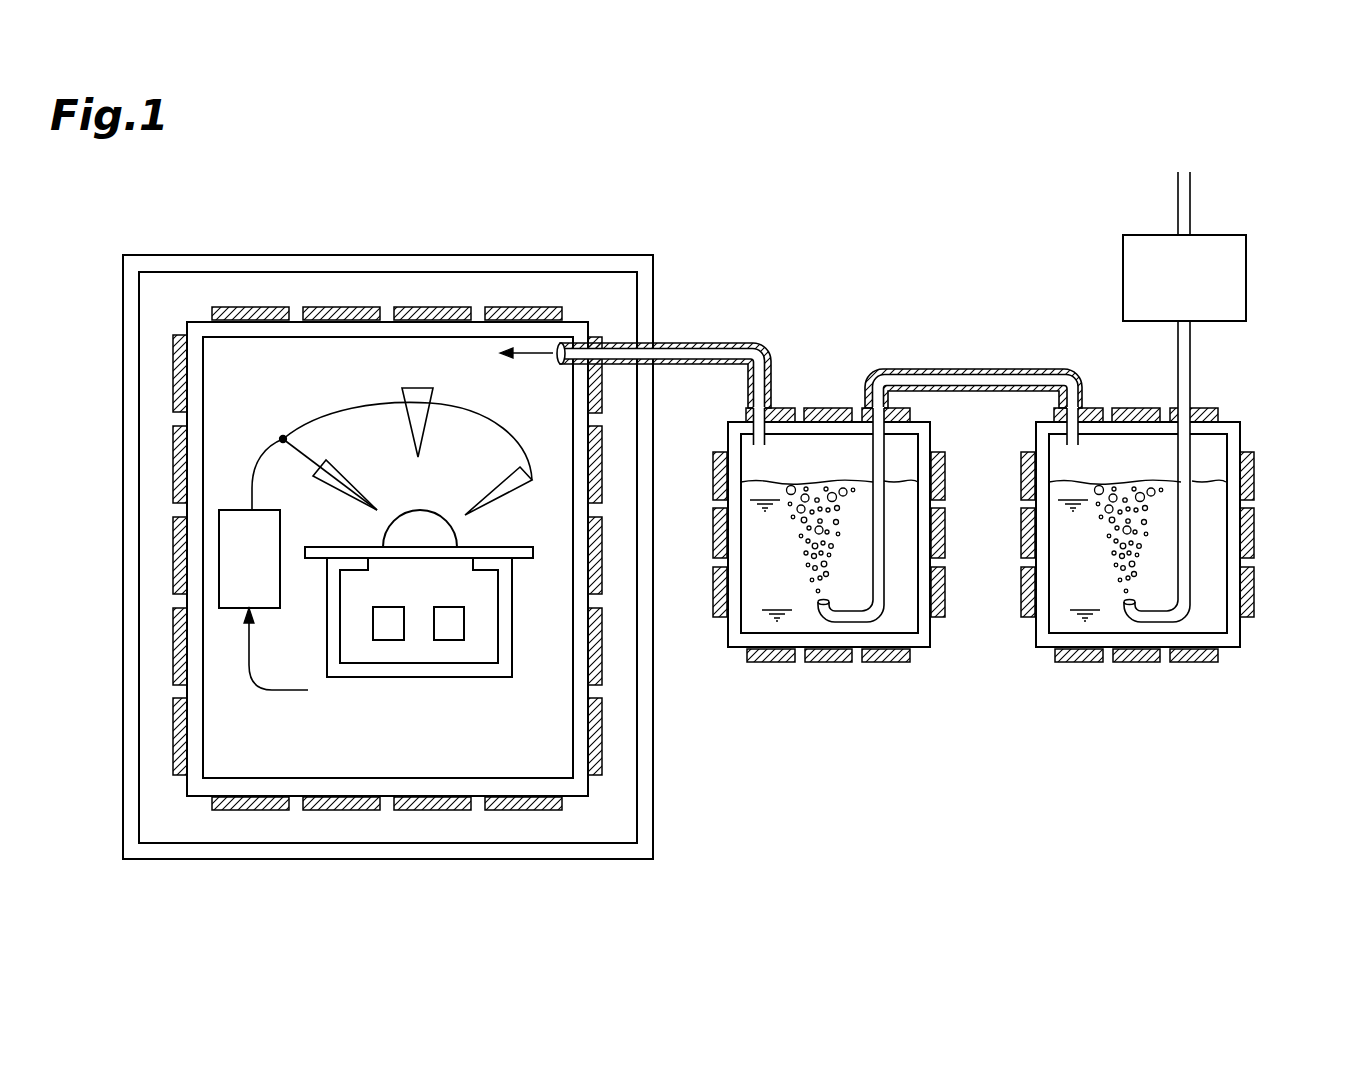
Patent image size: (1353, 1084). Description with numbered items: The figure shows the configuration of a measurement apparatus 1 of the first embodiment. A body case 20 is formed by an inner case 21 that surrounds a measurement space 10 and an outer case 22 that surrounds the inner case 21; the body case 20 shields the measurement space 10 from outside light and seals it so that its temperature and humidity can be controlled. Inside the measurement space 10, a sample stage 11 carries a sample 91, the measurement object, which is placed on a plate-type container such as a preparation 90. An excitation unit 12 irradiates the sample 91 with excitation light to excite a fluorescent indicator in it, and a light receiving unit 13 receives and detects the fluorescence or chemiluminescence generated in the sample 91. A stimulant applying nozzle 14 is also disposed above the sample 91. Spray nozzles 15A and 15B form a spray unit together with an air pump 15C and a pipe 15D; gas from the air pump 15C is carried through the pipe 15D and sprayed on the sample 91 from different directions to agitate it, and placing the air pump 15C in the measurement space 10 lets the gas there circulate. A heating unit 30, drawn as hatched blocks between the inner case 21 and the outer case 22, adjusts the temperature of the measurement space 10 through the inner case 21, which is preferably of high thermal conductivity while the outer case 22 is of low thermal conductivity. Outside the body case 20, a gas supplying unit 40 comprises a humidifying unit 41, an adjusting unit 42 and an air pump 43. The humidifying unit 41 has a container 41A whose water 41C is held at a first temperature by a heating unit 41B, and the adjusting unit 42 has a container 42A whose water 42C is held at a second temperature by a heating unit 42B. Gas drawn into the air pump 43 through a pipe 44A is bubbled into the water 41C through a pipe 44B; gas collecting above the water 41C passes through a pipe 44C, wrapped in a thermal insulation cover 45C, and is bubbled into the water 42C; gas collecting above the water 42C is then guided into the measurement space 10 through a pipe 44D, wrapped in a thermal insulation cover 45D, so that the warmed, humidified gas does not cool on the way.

The measurement apparatus 1 is at (937, 206).
The measurement space 10 is at (215, 757).
The sample stage 11 is at (502, 603).
The excitation unit 12 is at (397, 641).
The light receiving unit 13 is at (457, 641).
The stimulant applying nozzle 14 is at (419, 387).
The spray nozzle 15A is at (333, 477).
The spray nozzle 15B is at (512, 483).
The air pump 15C is at (270, 610).
The pipe 15D is at (267, 453).
The body case 20 is at (238, 200).
The inner case 21 is at (197, 400).
The outer case 22 is at (131, 302).
The heating unit 30 is at (277, 307).
The gas supplying unit 40 is at (1175, 741).
The humidifying unit 41 is at (1173, 578).
The container 41A is at (1233, 638).
The heating unit 41B is at (1253, 590).
The water 41C is at (1210, 548).
The adjusting unit 42 is at (860, 578).
The container 42A is at (923, 638).
The heating unit 42B is at (945, 590).
The water 42C is at (892, 530).
The air pump 43 is at (1246, 273).
The pipe 44A is at (1190, 206).
The pipe 44B is at (1190, 349).
The pipe 44C is at (952, 380).
The pipe 44D is at (683, 352).
The thermal insulation cover 45C is at (1024, 366).
The thermal insulation cover 45D is at (747, 340).
The preparation 90 is at (525, 543).
The sample 91 is at (427, 508).